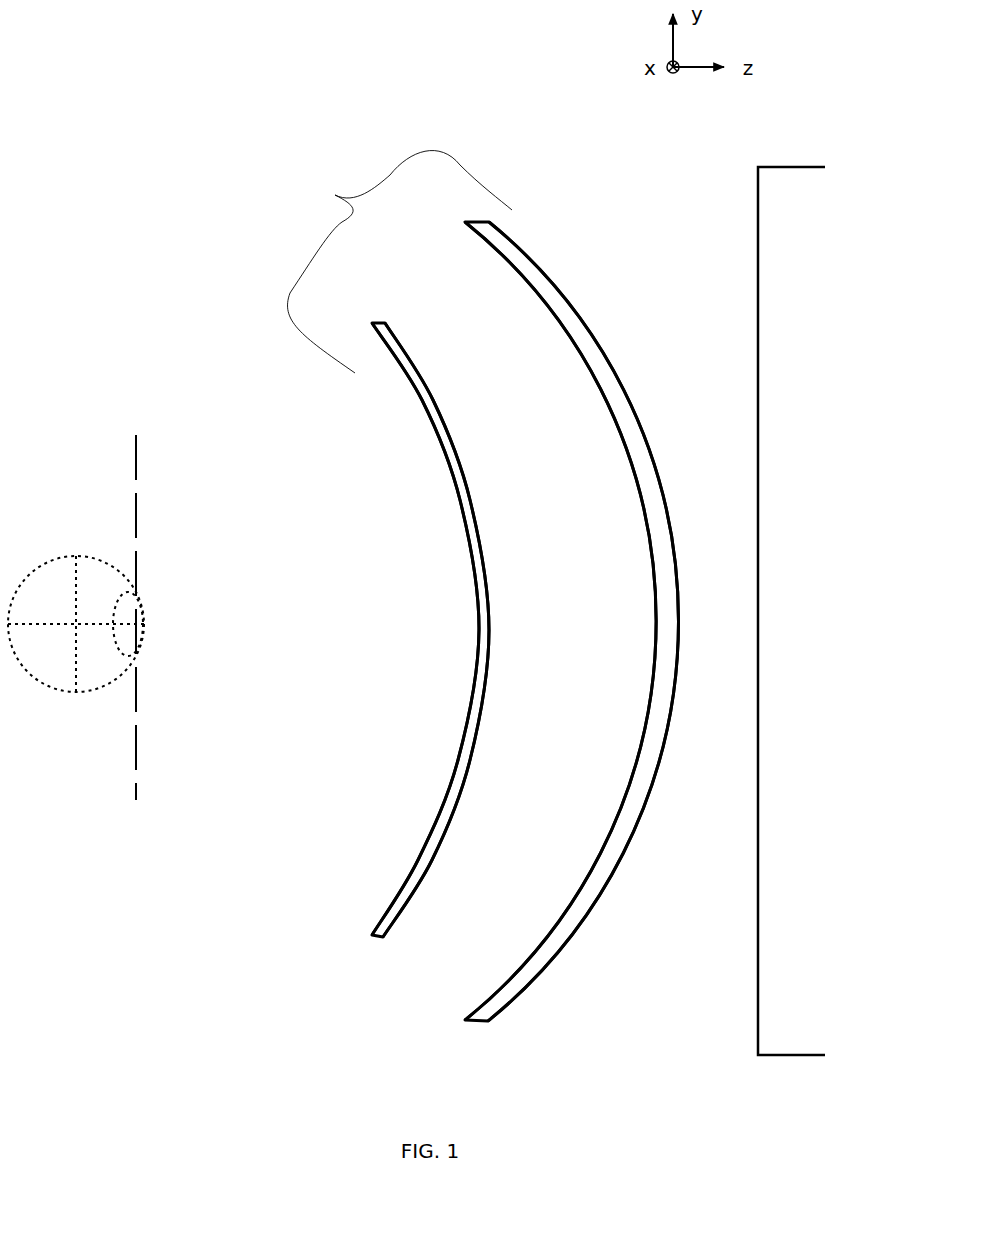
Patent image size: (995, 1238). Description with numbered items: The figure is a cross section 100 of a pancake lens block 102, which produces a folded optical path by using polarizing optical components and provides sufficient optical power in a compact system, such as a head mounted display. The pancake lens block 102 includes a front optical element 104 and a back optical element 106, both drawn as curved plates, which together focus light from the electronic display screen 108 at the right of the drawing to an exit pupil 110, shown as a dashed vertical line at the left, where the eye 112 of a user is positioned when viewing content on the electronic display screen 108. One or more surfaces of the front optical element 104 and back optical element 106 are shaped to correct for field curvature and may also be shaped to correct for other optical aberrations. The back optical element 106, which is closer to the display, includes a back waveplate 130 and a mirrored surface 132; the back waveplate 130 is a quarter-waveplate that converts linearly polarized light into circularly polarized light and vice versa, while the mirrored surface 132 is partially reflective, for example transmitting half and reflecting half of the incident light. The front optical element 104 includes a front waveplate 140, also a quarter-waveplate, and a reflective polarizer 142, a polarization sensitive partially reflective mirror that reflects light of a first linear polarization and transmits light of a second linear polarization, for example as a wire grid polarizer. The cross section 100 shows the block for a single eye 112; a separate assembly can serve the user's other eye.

The cross section 100 is at (82, 80).
The pancake lens block 102 is at (384, 233).
The front optical element 104 is at (388, 354).
The back optical element 106 is at (526, 250).
The electronic display screen 108 is at (757, 218).
The exit pupil 110 is at (138, 805).
The eye 112 is at (70, 554).
The back waveplate 130 is at (607, 899).
The mirrored surface 132 is at (607, 834).
The front waveplate 140 is at (404, 908).
The reflective polarizer 142 is at (417, 853).